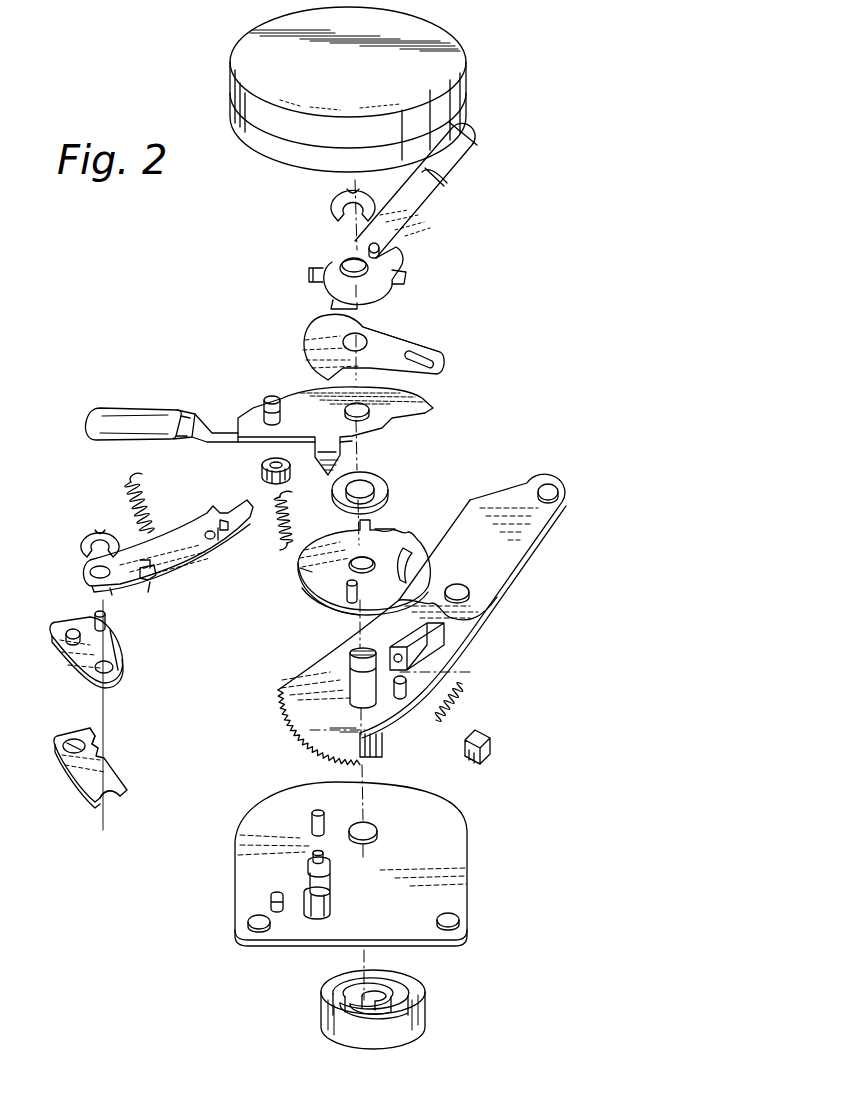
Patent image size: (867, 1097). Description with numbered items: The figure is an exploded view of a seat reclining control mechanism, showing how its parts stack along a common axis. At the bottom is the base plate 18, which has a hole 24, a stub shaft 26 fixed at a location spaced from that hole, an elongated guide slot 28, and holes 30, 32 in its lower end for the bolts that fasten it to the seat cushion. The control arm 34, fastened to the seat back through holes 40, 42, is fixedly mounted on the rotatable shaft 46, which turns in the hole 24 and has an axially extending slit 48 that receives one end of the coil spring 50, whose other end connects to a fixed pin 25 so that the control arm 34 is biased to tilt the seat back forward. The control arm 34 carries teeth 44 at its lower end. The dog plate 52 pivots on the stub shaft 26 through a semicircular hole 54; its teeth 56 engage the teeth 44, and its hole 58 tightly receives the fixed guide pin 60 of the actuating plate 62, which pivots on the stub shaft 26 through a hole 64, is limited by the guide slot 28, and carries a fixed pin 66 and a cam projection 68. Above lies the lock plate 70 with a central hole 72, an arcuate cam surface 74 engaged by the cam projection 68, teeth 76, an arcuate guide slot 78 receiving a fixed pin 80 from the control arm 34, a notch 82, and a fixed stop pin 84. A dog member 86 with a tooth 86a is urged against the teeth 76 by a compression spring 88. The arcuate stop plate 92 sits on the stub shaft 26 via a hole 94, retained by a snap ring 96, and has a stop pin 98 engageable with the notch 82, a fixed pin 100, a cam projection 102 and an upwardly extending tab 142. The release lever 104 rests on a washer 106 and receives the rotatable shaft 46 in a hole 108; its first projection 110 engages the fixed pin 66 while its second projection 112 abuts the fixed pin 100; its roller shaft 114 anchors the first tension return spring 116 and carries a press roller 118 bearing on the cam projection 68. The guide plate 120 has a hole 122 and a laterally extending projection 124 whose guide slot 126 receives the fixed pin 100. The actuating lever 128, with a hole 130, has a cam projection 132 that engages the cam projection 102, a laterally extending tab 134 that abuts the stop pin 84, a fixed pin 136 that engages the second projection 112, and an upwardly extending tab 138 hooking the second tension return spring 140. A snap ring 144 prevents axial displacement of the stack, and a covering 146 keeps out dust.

The covering 146 is at (468, 82).
The actuating lever 128 is at (418, 212).
The snap ring 144 is at (330, 198).
The hole 130 is at (340, 262).
The upwardly extending tab 138 is at (309, 279).
The laterally extending tab 134 is at (331, 304).
The fixed pin 136 is at (400, 253).
The cam projection 132 is at (405, 278).
The guide plate 120 is at (385, 334).
The hole 122 is at (343, 344).
The laterally extending projection 124 is at (430, 345).
The guide slot 126 is at (440, 362).
The second projection 112 is at (433, 404).
The hole 108 is at (369, 416).
The release lever 104 is at (232, 420).
The roller shaft 114 is at (268, 440).
The second tension return spring 140 is at (152, 500).
The press roller 118 is at (262, 472).
The cam projection 102 is at (215, 520).
The first projection 110 is at (330, 478).
The washer 106 is at (388, 486).
The teeth 76 is at (390, 530).
The arcuate guide slot 78 is at (414, 565).
The lock plate 70 is at (428, 560).
The hole 72 is at (312, 598).
The fixed stop pin 84 is at (347, 600).
The control arm 34 is at (488, 618).
The hole 40 is at (558, 500).
The hole 42 is at (469, 592).
The teeth 44 is at (278, 712).
The rotatable shaft 46 is at (350, 683).
The axially extending slit 48 is at (376, 760).
The notch 82 is at (430, 640).
The fixed pin 80 is at (401, 698).
The compression spring 88 is at (462, 700).
The dog member 86 is at (490, 750).
The tooth 86a is at (478, 766).
The base plate 18 is at (467, 906).
The hole 24 is at (377, 832).
The fixed pin 25 is at (315, 810).
The stub shaft 26 is at (330, 888).
The elongated guide slot 28 is at (271, 902).
The hole 30 is at (262, 932).
The hole 32 is at (458, 925).
The coil spring 50 is at (325, 1010).
The fixed guide pin 60 is at (68, 650).
The fixed pin 66 is at (95, 620).
The actuating plate 62 is at (72, 680).
The hole 64 is at (113, 673).
The cam projection 68 is at (118, 640).
The snap ring 96 is at (98, 536).
The hole 94 is at (90, 572).
The stop pin 98 is at (160, 578).
The fixed pin 100 is at (224, 540).
The arcuate stop plate 92 is at (150, 592).
The upwardly extending tab 142 is at (112, 595).
The first tension return spring 116 is at (278, 548).
The arcuate cam surface 74 is at (300, 570).
The dog plate 52 is at (80, 788).
The hole 58 is at (66, 744).
The teeth 56 is at (100, 732).
The semicircular hole 54 is at (120, 797).